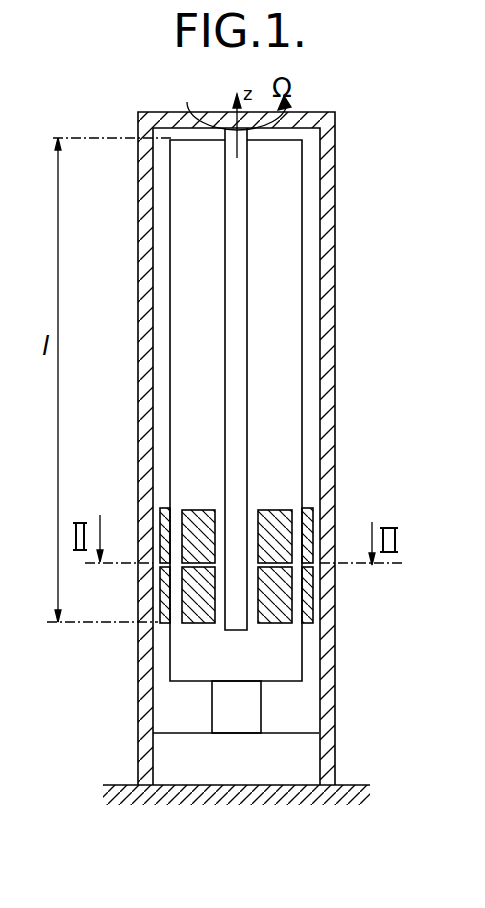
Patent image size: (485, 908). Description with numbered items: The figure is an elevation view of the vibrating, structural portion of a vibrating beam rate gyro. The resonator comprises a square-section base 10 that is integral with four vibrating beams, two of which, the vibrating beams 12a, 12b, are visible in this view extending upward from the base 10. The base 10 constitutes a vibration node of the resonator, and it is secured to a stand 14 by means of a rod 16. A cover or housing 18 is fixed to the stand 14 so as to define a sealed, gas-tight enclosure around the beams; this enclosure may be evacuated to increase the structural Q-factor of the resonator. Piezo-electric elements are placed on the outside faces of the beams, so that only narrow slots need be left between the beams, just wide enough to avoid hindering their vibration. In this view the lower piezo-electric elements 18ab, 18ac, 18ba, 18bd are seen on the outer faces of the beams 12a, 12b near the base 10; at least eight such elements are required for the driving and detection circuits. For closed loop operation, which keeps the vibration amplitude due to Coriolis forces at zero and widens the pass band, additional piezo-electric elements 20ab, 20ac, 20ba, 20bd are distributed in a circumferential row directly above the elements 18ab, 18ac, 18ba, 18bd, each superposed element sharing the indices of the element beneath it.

The base 10 is at (190, 665).
The vibrating beam 12a is at (193, 335).
The vibrating beam 12b is at (292, 330).
The stand 14 is at (305, 765).
The rod 16 is at (253, 710).
The housing 18 is at (330, 183).
The piezo-electric element 18ab is at (162, 590).
The piezo-electric element 18ac is at (183, 602).
The piezo-electric element 18ba is at (313, 598).
The piezo-electric element 18bd is at (277, 607).
The additional piezo-electric element 20ab is at (163, 517).
The additional piezo-electric element 20ac is at (187, 517).
The additional piezo-electric element 20ba is at (312, 526).
The additional piezo-electric element 20bd is at (282, 518).